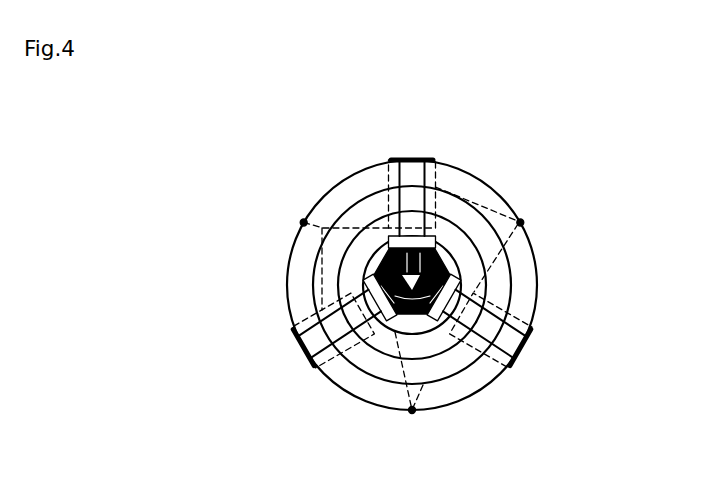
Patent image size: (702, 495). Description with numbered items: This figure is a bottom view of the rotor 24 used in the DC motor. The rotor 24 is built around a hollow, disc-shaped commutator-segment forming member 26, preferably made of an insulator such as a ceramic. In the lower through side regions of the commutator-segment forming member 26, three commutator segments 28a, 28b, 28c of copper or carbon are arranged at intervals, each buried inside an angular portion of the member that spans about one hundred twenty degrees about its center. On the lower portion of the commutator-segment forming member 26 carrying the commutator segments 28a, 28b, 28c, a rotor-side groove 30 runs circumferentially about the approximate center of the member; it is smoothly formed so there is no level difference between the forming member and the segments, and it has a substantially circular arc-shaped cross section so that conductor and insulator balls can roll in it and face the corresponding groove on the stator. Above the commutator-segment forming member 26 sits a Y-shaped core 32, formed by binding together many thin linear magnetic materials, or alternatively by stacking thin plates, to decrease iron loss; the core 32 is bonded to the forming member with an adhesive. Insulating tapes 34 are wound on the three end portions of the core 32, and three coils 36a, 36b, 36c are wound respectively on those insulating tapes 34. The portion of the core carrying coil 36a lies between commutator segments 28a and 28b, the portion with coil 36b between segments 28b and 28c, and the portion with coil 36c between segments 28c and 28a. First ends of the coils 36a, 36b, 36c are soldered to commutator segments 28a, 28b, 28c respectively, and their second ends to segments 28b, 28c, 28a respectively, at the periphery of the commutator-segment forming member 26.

The rotor 24 is at (471, 172).
The commutator-segment forming member 26 is at (531, 237).
The commutator segment 28a is at (505, 288).
The commutator segment 28b is at (346, 222).
The commutator segment 28c is at (377, 372).
The rotor-side groove 30 is at (369, 201).
The core 32 is at (413, 312).
The insulating tapes 34 is at (415, 235).
The coil 36a is at (410, 162).
The coil 36b is at (300, 342).
The coil 36c is at (527, 342).